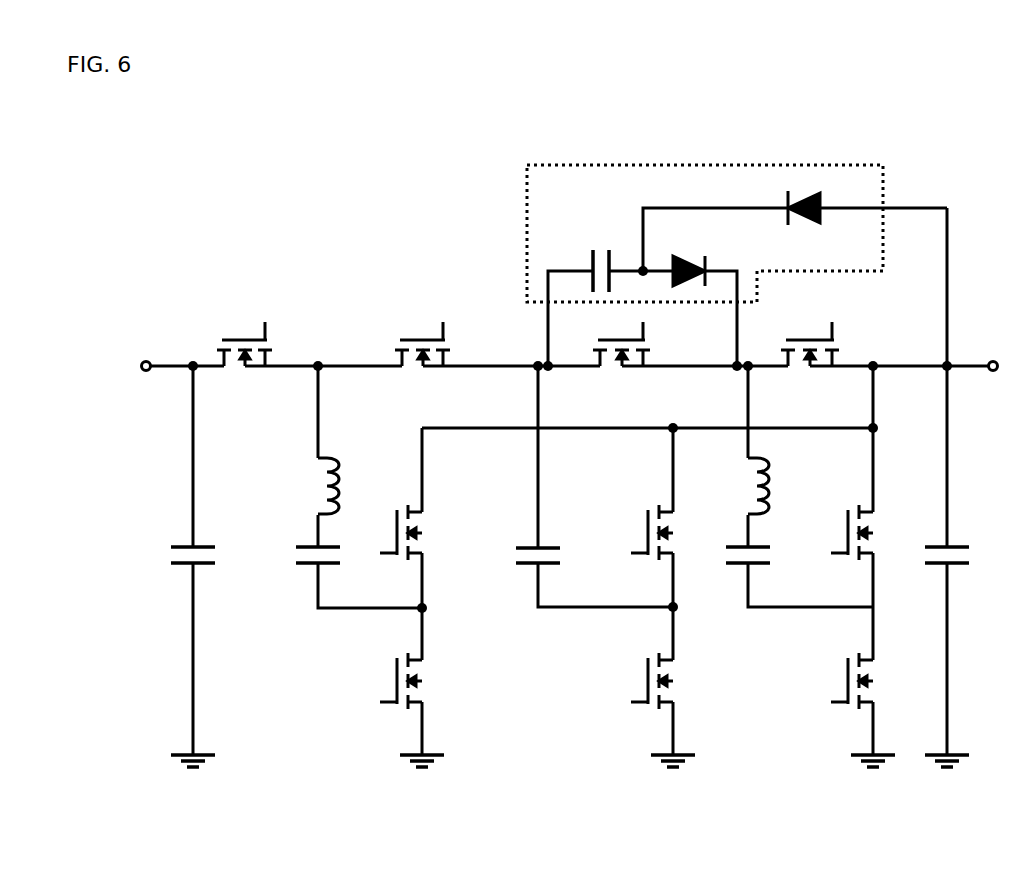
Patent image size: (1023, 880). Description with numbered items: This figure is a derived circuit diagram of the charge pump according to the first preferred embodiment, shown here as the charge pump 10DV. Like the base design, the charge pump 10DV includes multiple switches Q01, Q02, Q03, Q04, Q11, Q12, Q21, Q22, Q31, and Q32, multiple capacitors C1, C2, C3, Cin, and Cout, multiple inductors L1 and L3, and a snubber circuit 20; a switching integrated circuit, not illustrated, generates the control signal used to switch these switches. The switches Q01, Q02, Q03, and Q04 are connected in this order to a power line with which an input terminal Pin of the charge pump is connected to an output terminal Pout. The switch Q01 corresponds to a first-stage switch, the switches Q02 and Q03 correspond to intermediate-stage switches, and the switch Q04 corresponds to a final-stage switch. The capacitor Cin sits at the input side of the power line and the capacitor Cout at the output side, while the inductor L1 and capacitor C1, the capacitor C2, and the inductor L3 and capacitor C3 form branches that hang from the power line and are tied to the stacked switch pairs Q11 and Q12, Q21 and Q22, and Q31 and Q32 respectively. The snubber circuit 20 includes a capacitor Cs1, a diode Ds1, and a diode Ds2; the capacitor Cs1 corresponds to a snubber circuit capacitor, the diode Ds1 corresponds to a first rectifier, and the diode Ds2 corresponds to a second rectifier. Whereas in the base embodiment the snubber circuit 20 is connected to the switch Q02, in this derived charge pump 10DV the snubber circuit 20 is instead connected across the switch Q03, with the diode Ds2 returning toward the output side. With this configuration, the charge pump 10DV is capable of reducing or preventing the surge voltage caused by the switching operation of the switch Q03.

The charge pump 10DV is at (207, 170).
The snubber circuit 20 is at (853, 165).
The input terminal Pin is at (138, 353).
The output terminal Pout is at (993, 354).
The switch Q01 is at (233, 343).
The switch Q02 is at (412, 343).
The switch Q03 is at (611, 343).
The switch Q04 is at (799, 343).
The switch Q11 is at (397, 519).
The switch Q12 is at (387, 691).
The switch Q21 is at (649, 518).
The switch Q22 is at (638, 691).
The switch Q31 is at (847, 521).
The switch Q32 is at (838, 693).
The capacitor Cin is at (204, 569).
The capacitor Cout is at (959, 569).
The capacitor C1 is at (312, 569).
The capacitor C2 is at (532, 569).
The capacitor C3 is at (742, 570).
The inductor L1 is at (337, 474).
The inductor L3 is at (767, 474).
The capacitor Cs1 is at (598, 258).
The diode Ds1 is at (690, 258).
The diode Ds2 is at (811, 223).